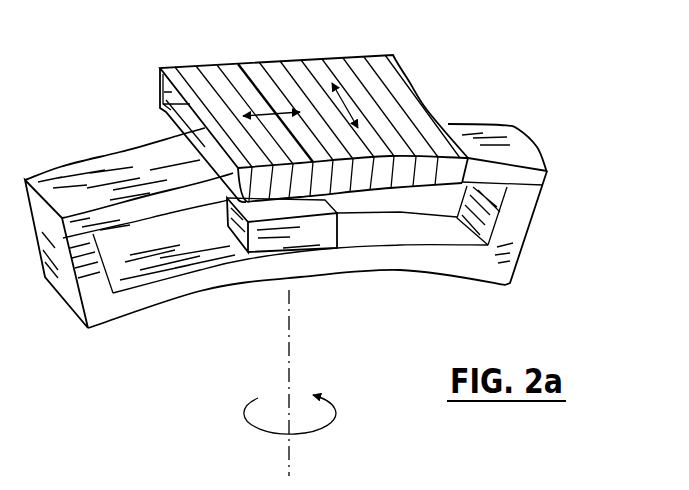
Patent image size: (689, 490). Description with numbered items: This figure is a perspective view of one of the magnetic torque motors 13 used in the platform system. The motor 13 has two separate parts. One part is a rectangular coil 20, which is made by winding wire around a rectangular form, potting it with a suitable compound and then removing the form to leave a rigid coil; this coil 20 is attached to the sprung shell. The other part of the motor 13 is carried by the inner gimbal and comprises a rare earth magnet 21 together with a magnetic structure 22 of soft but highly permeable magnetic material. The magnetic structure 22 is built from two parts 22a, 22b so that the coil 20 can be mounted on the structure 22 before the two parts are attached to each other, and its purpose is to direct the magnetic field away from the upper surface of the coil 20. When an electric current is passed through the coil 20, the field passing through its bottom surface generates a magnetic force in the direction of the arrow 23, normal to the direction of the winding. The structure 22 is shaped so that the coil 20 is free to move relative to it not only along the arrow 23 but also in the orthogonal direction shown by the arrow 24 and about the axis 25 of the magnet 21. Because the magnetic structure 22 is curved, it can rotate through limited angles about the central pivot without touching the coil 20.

The magnetic torque motor 13 is at (148, 87).
The rectangular coil 20 is at (313, 68).
The rare earth magnet 21 is at (277, 248).
The magnetic structure 22 is at (92, 158).
The part of magnetic structure 22a is at (510, 226).
The part of magnetic structure 22b is at (515, 173).
The arrow 23 is at (232, 62).
The arrow 24 is at (343, 100).
The axis of the magnet 25 is at (303, 437).